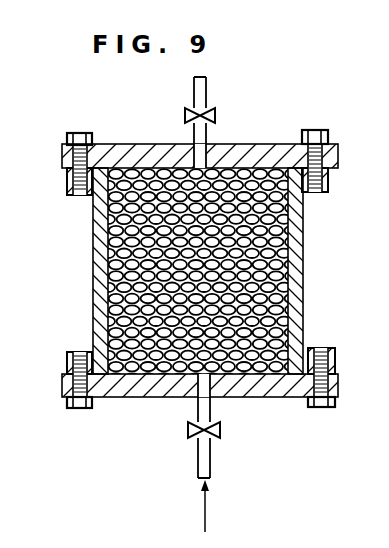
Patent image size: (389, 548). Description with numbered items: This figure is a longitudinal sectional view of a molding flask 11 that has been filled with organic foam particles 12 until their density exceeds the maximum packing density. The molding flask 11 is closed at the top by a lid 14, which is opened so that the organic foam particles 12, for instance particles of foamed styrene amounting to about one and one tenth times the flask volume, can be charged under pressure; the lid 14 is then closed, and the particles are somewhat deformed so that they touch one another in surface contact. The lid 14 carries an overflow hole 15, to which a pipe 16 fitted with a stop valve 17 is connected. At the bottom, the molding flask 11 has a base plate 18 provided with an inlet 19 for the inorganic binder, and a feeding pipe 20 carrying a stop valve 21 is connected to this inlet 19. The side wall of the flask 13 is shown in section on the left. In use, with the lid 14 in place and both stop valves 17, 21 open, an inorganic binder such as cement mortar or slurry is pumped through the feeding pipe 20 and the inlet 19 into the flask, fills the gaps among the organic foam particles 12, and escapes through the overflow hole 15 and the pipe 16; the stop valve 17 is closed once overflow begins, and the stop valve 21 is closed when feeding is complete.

The molding flask 11 is at (297, 238).
The organic foam particles 12 is at (113, 331).
The housing wall 13 is at (103, 223).
The lid 14 is at (282, 151).
The overflow hole 15 is at (194, 140).
The pipe 16 is at (206, 138).
The stop valve 17 is at (214, 113).
The base plate 18 is at (292, 383).
The inlet 19 is at (211, 399).
The pipe for feeding the inorganic binder 20 is at (198, 405).
The stop valve 21 is at (188, 435).